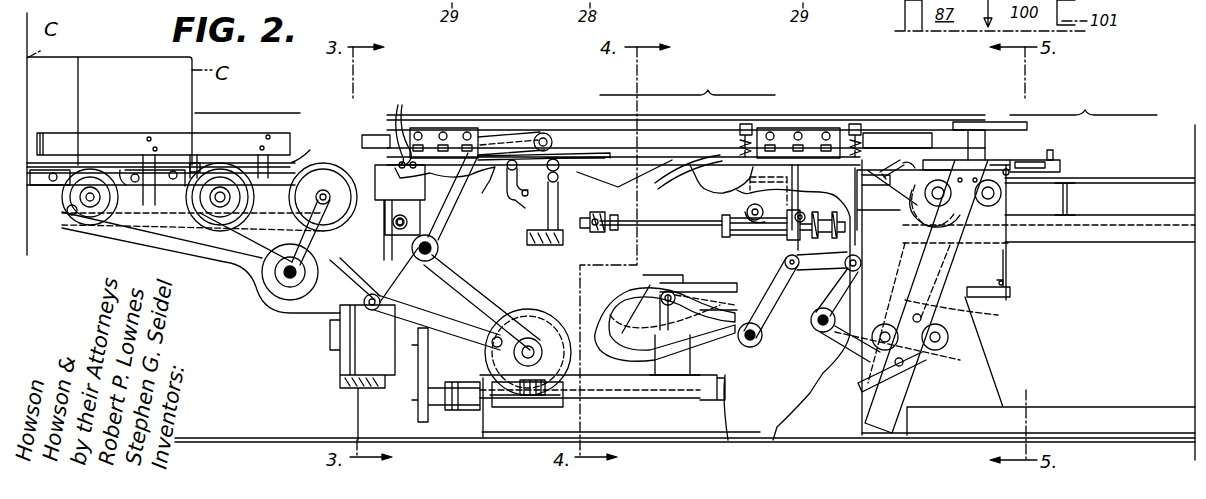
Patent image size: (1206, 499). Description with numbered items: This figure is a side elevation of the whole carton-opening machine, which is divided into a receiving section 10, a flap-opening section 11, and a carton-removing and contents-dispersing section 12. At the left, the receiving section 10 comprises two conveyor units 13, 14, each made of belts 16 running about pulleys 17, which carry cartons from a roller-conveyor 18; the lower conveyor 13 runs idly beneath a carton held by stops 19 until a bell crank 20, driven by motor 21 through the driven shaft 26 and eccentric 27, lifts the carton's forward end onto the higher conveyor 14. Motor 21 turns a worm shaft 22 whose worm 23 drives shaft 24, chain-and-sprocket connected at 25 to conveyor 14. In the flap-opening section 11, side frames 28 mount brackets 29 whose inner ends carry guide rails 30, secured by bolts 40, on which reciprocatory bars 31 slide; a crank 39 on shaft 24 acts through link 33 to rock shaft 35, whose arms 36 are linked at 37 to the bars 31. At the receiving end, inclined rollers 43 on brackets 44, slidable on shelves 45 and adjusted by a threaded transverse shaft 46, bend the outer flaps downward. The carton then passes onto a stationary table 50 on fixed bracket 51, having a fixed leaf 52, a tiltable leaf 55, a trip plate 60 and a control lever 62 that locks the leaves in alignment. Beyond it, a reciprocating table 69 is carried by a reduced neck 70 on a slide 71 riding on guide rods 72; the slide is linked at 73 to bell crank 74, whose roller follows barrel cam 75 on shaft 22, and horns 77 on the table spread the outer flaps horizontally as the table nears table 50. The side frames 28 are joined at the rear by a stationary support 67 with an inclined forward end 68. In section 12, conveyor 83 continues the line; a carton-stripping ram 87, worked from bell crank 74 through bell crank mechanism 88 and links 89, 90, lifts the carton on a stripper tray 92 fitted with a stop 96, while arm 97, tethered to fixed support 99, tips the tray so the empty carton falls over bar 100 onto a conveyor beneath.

The receiving section 10 is at (247, 103).
The flap-opening section 11 is at (686, 121).
The carton-removing and contents-dispersing section 12 is at (1083, 105).
The conveyor unit 13 is at (124, 165).
The conveyor unit 14 is at (295, 160).
The belts 16 is at (100, 228).
The pulleys 17 is at (215, 165).
The roller-conveyor 18 is at (58, 185).
The stops 19 is at (193, 162).
The bell crank 20 is at (133, 228).
The drive motor 21 is at (362, 372).
The worm shaft 22 is at (445, 400).
The worm 23 is at (528, 398).
The shaft 24 is at (535, 340).
The chain and sprocket connection 25 is at (460, 282).
The driven shaft 26 is at (323, 214).
The eccentric 27 is at (305, 280).
The side frames 28 is at (445, 193).
The brackets 29 is at (432, 128).
The guide rails 30 is at (557, 132).
The reciprocatory bars 31 is at (370, 135).
The link 33 is at (440, 325).
The shaft 35 is at (438, 252).
The arms 36 is at (445, 220).
The link connection 37 is at (510, 135).
The crank 39 is at (505, 335).
The bolts 40 is at (1005, 252).
The rollers 43 is at (403, 132).
The brackets 44 is at (400, 212).
The shelves 45 is at (355, 279).
The transverse shaft 46 is at (395, 225).
The stationary table 50 is at (514, 184).
The fixed bracket 51 is at (530, 224).
The fixed leaf 52 is at (490, 137).
The tiltable leaf 55 is at (598, 150).
The trip plate 60 is at (555, 160).
The control lever 62 is at (558, 185).
The transverse stationary support 67 is at (892, 160).
The inclined forward end 68 is at (856, 186).
The reciprocating table 69 is at (670, 165).
The reduced neck 70 is at (790, 186).
The slide 71 is at (765, 235).
The guide rods 72 is at (673, 225).
The link 73 is at (802, 212).
The bell crank 74 is at (775, 298).
The barrel cam 75 is at (695, 285).
The horns 77 is at (615, 188).
The conveyor 83 is at (1150, 178).
The carton-stripping ram 87 is at (939, 296).
The bell crank mechanism 88 is at (845, 320).
The link 89 is at (822, 262).
The link 90 is at (920, 358).
The stripper tray 92 is at (1023, 160).
The stop 96 is at (1055, 150).
The arm 97 is at (1010, 170).
The fixed support 99 is at (1012, 290).
The bar 100 is at (975, 122).